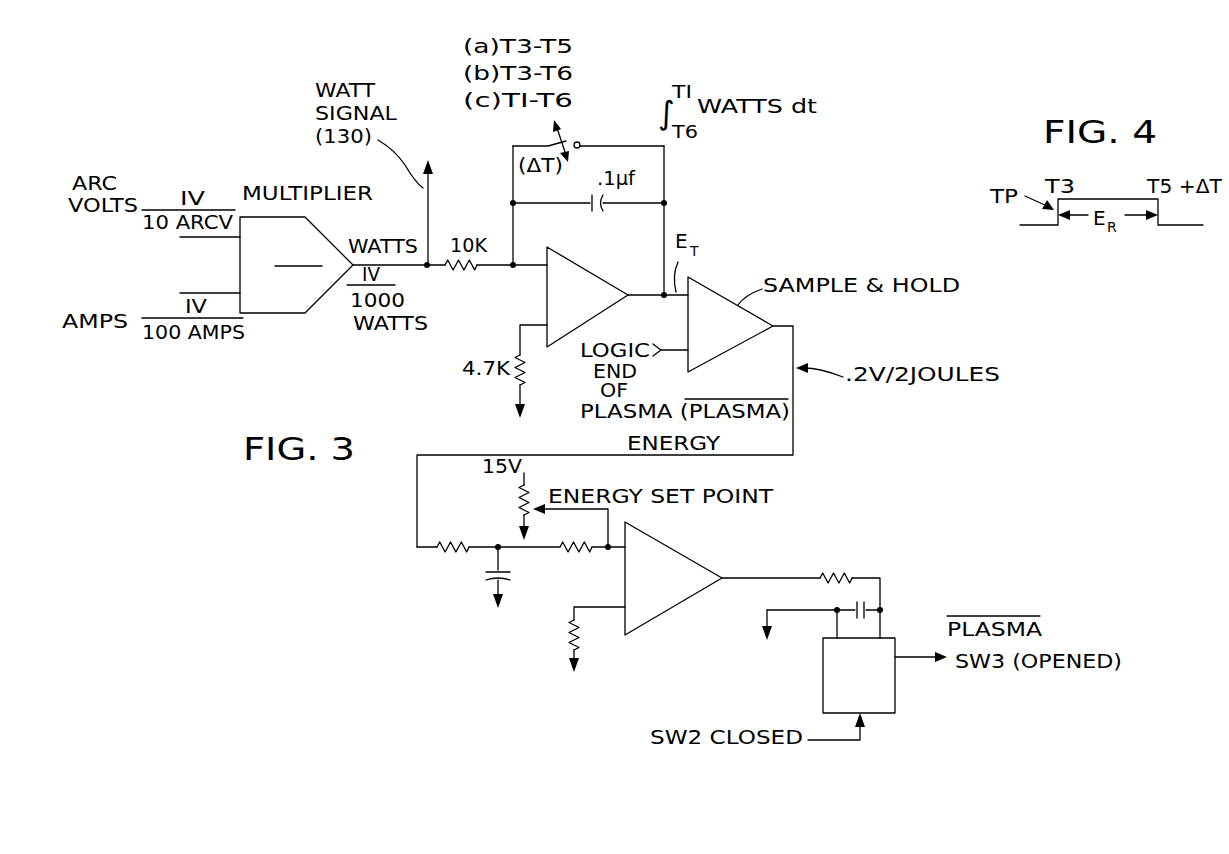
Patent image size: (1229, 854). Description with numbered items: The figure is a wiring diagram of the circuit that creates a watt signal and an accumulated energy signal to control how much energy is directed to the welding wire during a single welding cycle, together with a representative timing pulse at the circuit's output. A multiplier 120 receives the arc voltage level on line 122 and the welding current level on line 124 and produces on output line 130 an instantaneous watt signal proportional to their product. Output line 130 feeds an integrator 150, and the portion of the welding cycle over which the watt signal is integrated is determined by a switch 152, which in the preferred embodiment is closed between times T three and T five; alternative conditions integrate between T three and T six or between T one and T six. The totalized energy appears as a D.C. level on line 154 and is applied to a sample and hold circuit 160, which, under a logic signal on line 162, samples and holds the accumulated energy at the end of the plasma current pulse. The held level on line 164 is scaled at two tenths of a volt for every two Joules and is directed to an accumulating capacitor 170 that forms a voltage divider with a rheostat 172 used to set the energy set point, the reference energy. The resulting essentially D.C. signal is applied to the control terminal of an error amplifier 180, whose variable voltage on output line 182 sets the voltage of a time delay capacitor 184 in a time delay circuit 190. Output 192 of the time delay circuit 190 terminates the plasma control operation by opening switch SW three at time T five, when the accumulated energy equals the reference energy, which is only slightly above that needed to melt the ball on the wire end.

The multiplier 120 is at (282, 314).
The arc voltage line 122 is at (195, 241).
The welding current line 124 is at (220, 292).
The output line 130 is at (430, 280).
The integrator 150 is at (586, 275).
The switch 152 is at (580, 142).
The accumulated energy line 154 is at (645, 291).
The sample and hold circuit 160 is at (712, 290).
The logic line 162 is at (670, 348).
The held voltage line 164 is at (472, 453).
The accumulating capacitor 170 is at (485, 574).
The rheostat 172 is at (517, 507).
The error amplifier 180 is at (683, 557).
The output line 182 is at (770, 578).
The time delay capacitor 184 is at (862, 600).
The time delay circuit 190 is at (895, 697).
The output 192 is at (912, 650).